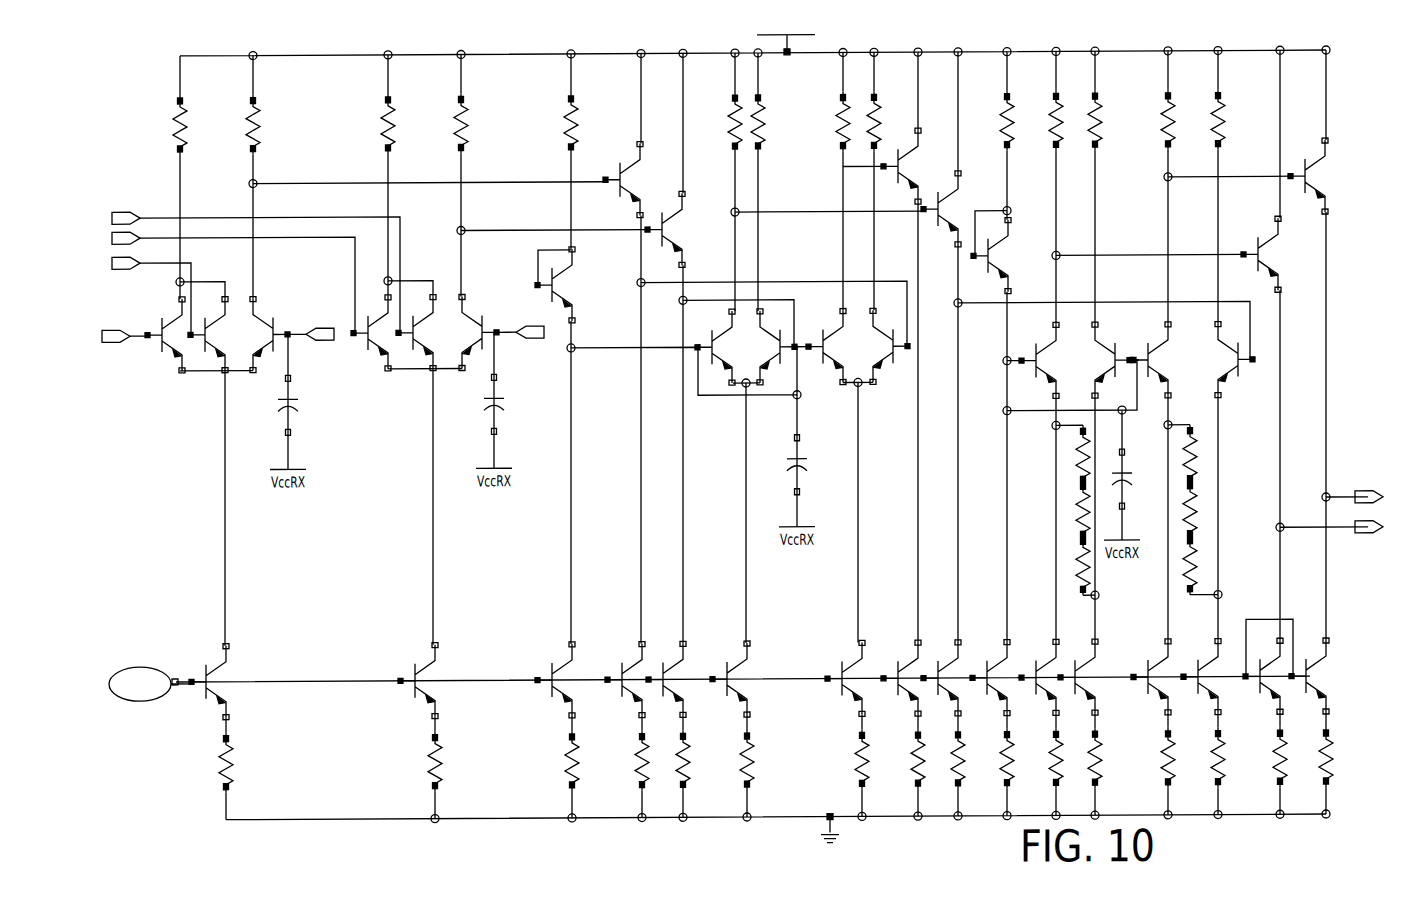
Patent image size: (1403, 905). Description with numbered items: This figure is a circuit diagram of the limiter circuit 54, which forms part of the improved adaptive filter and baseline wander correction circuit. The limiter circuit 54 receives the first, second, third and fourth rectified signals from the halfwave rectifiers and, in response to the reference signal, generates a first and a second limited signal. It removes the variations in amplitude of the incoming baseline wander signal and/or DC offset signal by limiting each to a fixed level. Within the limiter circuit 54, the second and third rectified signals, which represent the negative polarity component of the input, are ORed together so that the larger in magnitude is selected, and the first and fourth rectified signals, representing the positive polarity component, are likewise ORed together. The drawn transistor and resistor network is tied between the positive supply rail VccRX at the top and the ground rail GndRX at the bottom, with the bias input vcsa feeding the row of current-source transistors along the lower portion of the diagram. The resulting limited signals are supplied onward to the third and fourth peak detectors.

The limiter circuit 54 is at (350, 586).
The positive supply rail VccRX is at (785, 27).
The ground rail GndRX is at (842, 841).
The current source bias input vcsa is at (150, 684).